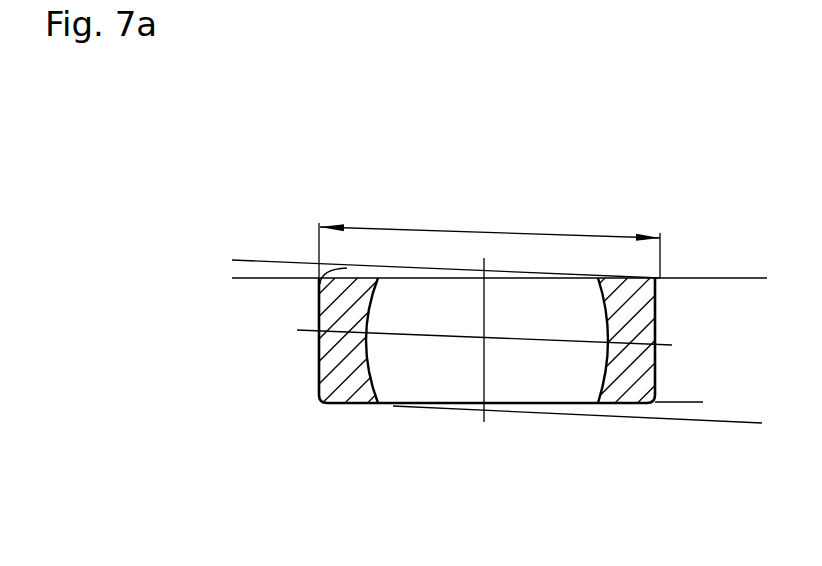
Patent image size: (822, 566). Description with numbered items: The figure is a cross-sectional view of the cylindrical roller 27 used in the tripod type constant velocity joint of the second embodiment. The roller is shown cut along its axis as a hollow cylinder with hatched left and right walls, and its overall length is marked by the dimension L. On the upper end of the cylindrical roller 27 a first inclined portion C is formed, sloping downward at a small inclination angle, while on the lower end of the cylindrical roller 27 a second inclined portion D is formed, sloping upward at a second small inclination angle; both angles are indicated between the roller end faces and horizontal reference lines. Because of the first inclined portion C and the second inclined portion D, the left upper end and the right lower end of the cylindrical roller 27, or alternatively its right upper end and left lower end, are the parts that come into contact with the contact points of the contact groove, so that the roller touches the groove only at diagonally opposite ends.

The cylindrical roller 27 is at (640, 306).
The first inclined portion C is at (318, 292).
The second inclined portion D is at (613, 408).
The overall length L is at (758, 280).